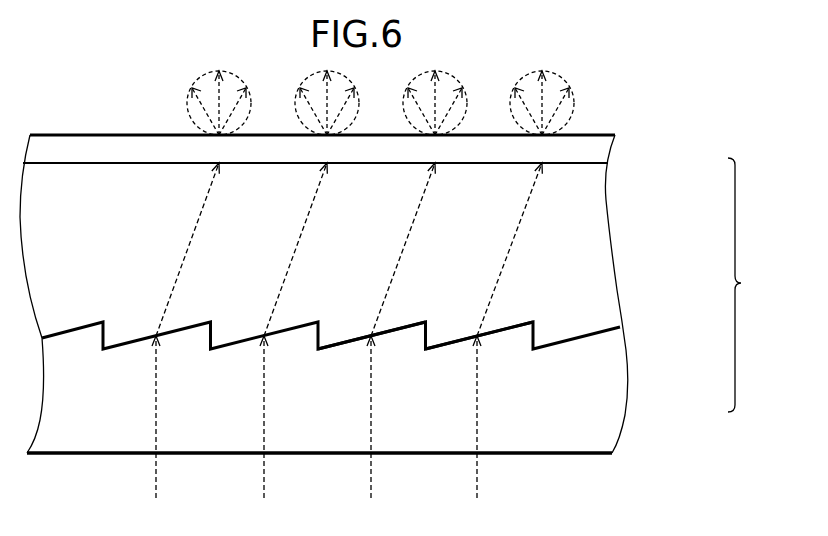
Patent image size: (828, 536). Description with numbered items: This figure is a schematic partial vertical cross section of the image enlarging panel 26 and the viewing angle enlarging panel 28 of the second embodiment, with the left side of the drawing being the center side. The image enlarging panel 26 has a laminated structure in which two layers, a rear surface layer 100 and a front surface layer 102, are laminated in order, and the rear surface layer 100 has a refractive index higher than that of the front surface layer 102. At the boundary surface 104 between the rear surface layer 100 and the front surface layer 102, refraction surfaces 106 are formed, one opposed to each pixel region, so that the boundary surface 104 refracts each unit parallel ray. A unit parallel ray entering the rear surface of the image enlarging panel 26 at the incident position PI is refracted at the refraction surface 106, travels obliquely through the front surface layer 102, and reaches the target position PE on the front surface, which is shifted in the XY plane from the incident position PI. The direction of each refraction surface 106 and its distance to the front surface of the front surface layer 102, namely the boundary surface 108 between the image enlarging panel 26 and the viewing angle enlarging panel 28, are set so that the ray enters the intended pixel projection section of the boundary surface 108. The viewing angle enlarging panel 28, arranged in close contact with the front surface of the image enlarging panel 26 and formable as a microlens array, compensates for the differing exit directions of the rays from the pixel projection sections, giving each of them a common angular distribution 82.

The image enlarging panel 26 is at (754, 285).
The viewing angle enlarging panel 28 is at (603, 150).
The common angular distribution 82 is at (455, 78).
The rear surface layer 100 is at (628, 395).
The front surface layer 102 is at (612, 248).
The boundary surface 104 is at (618, 322).
The refraction surface 106 is at (396, 332).
The boundary surface 108 is at (604, 172).
The target position PE is at (437, 165).
The incident position PI is at (371, 454).